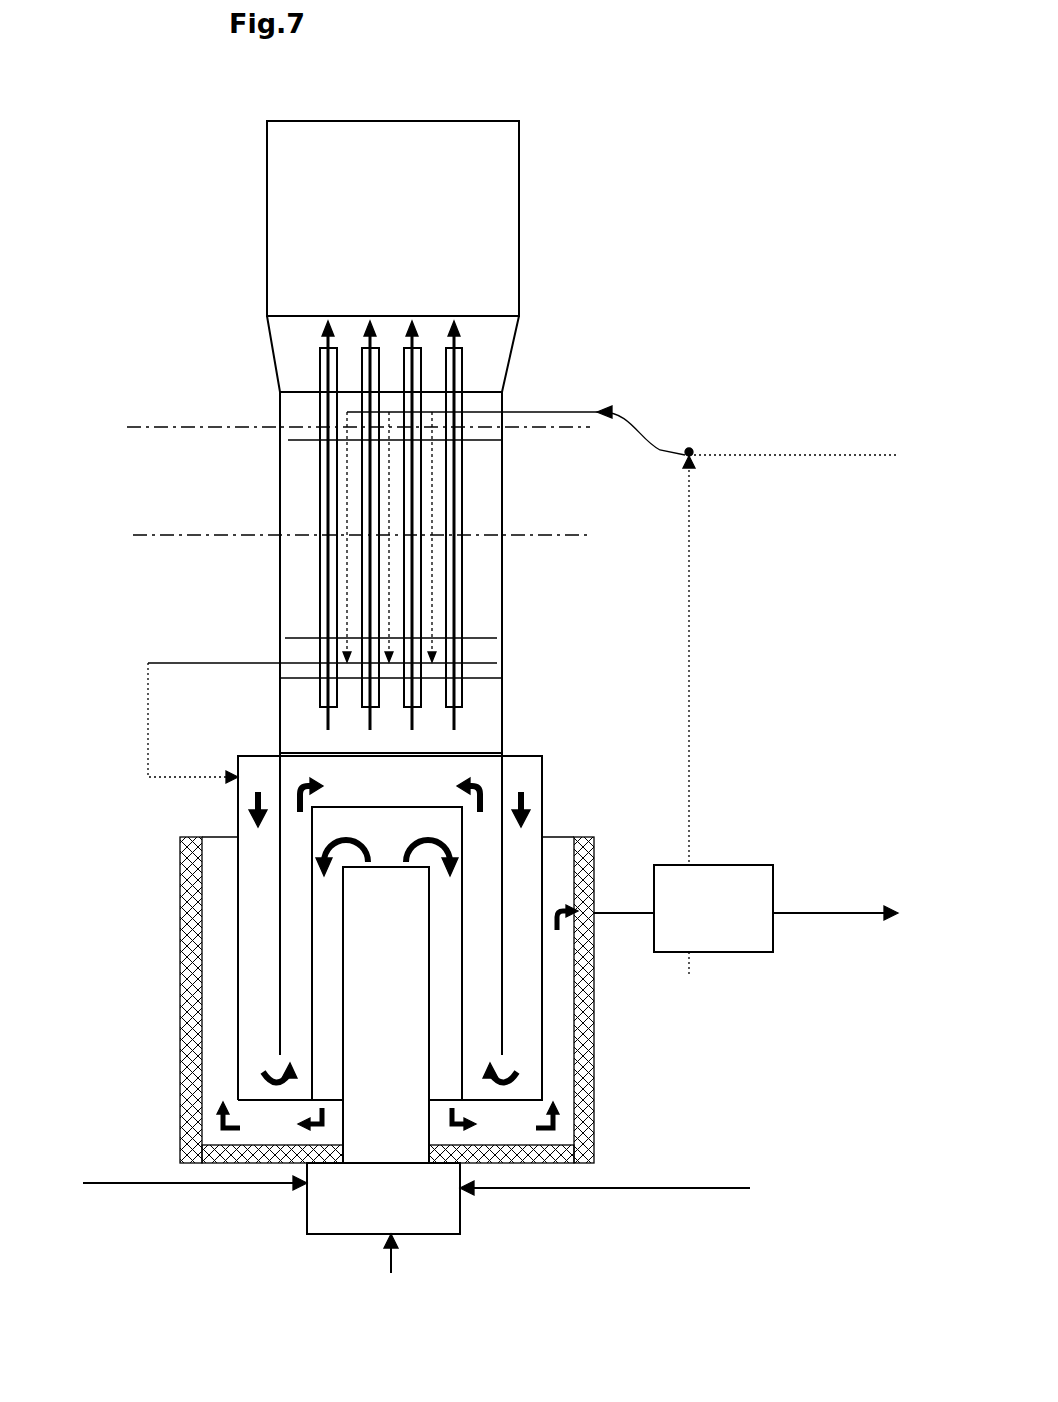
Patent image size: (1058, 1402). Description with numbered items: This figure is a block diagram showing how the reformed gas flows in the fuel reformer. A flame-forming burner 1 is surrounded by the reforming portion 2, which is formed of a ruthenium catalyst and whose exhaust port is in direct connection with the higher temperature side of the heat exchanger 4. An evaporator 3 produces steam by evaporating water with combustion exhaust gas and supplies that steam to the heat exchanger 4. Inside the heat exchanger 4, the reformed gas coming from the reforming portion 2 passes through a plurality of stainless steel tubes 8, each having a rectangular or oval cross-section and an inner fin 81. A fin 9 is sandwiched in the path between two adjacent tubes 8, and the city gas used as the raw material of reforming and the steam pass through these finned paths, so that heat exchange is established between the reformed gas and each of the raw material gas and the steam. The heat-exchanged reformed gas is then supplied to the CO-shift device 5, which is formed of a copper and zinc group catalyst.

The burner 1 is at (443, 1175).
The reforming portion 2 is at (487, 770).
The evaporator 3 is at (734, 863).
The heat exchanger 4 is at (226, 581).
The CO-shift device 5 is at (520, 177).
The tube 8 is at (463, 570).
The inner fin 81 is at (455, 590).
The fin 9 is at (437, 477).